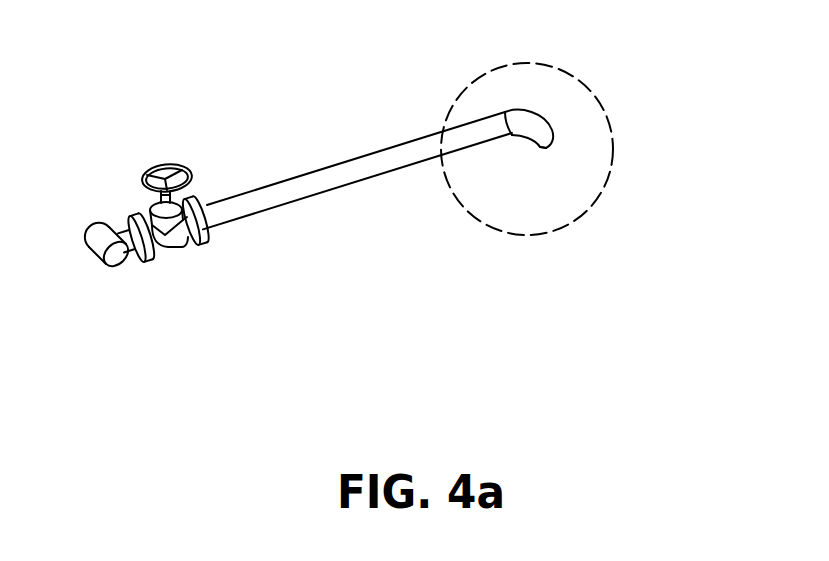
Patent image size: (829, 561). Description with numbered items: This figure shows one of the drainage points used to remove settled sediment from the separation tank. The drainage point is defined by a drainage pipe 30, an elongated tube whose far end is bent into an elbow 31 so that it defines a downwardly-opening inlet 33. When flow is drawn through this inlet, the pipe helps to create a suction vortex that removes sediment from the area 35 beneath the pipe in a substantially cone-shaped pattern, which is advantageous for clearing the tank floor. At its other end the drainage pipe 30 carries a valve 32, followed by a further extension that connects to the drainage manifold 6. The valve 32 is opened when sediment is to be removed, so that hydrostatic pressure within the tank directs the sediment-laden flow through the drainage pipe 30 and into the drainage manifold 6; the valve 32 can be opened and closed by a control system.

The drainage manifold 6 is at (102, 243).
The drainage pipe 30 is at (403, 150).
The elbow 31 is at (537, 112).
The valve 32 is at (166, 178).
The downwardly-opening inlet 33 is at (543, 146).
The area beneath the pipe 35 is at (470, 216).